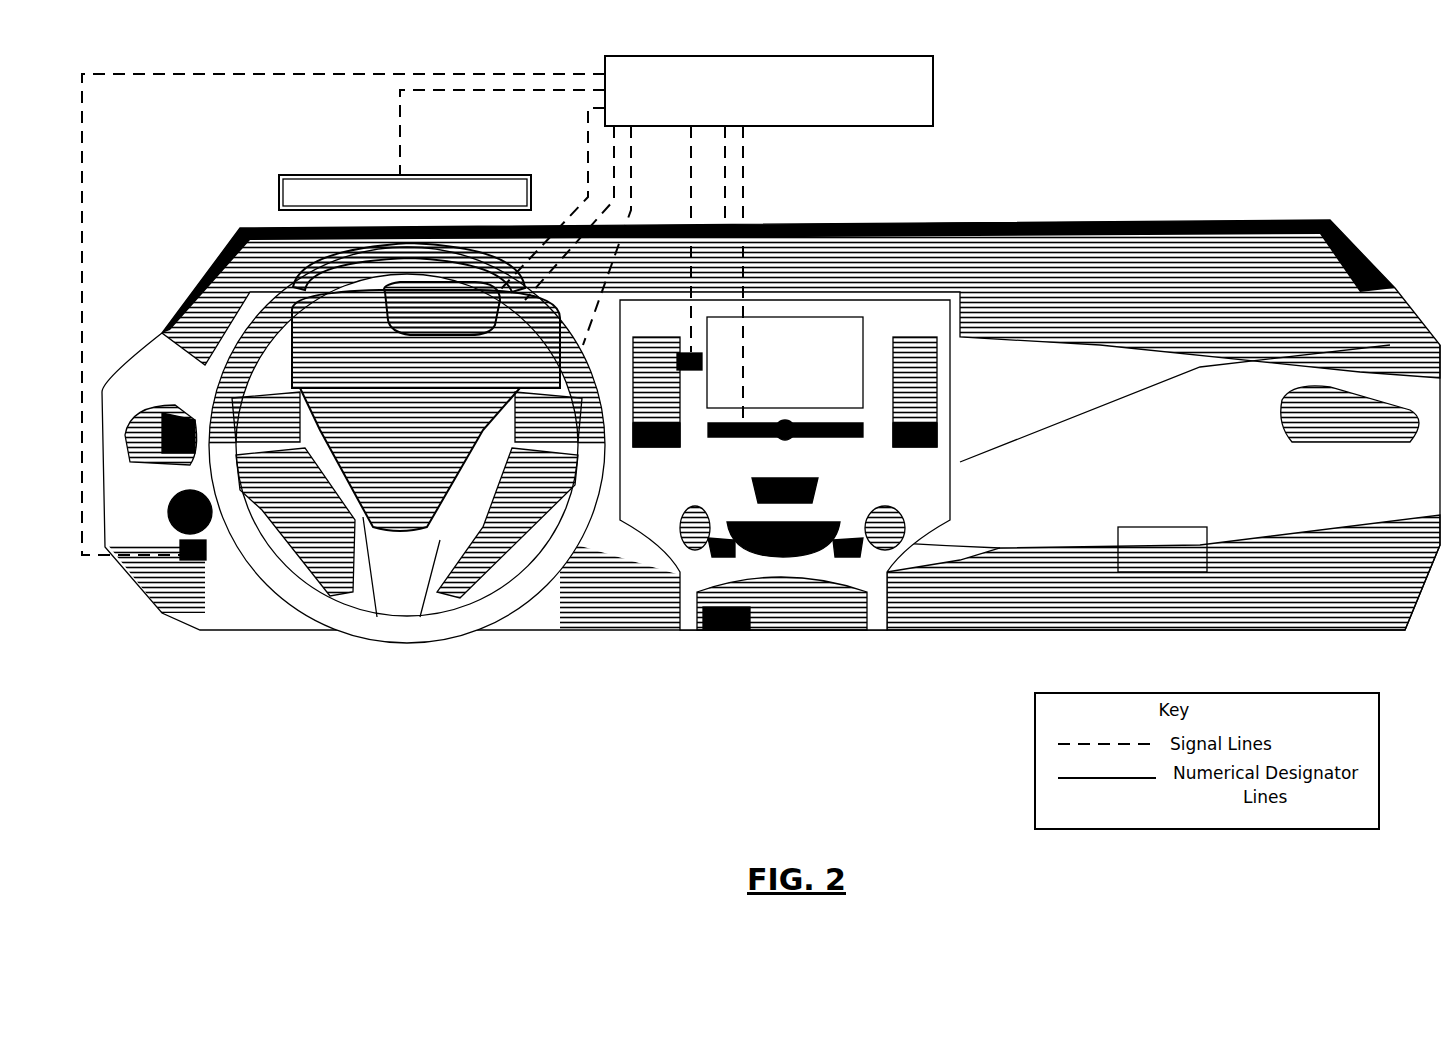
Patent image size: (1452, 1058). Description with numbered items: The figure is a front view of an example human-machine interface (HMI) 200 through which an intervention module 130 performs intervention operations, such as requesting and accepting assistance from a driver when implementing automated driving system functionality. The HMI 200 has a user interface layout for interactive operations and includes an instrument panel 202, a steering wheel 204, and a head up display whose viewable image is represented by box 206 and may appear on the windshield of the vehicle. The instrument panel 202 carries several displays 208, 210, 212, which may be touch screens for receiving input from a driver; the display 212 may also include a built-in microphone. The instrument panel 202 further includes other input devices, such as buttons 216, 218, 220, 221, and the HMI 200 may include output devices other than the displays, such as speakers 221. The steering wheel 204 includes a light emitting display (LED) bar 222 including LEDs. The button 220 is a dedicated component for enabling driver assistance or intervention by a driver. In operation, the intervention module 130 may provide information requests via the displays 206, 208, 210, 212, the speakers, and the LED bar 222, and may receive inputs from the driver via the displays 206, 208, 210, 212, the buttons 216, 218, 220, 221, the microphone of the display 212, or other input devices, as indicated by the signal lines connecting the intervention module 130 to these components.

The intervention module 130 is at (933, 80).
The human-machine interface 200 is at (1223, 118).
The instrument panel 202 is at (1352, 277).
The steering wheel 204 is at (425, 622).
The head up display 206 is at (338, 175).
The display 208 is at (443, 298).
The display 210 is at (300, 342).
The display 212 is at (840, 337).
The button 216 is at (744, 433).
The button 218 is at (683, 352).
The button 220 is at (193, 560).
The button 221 is at (255, 245).
The light emitting display bar 222 is at (322, 252).